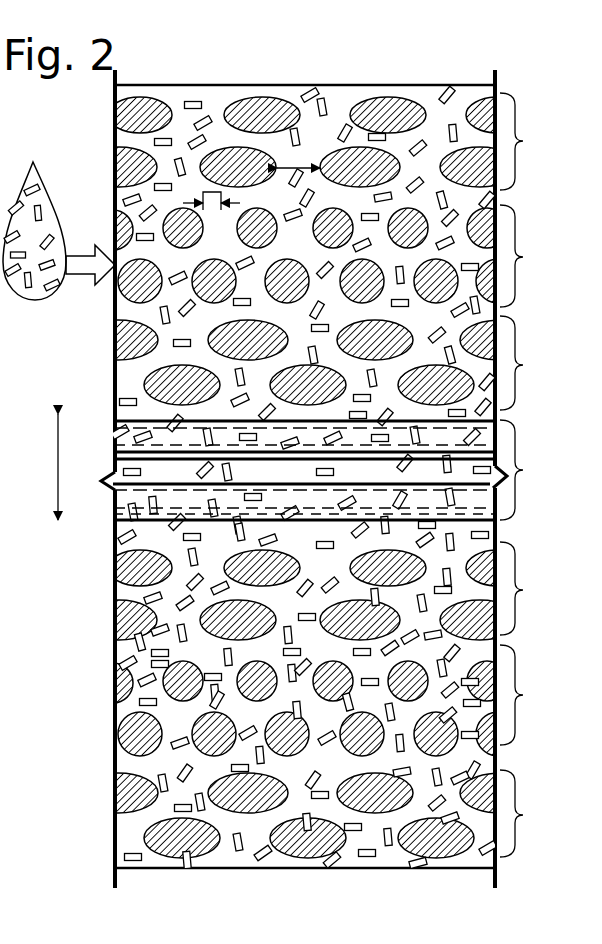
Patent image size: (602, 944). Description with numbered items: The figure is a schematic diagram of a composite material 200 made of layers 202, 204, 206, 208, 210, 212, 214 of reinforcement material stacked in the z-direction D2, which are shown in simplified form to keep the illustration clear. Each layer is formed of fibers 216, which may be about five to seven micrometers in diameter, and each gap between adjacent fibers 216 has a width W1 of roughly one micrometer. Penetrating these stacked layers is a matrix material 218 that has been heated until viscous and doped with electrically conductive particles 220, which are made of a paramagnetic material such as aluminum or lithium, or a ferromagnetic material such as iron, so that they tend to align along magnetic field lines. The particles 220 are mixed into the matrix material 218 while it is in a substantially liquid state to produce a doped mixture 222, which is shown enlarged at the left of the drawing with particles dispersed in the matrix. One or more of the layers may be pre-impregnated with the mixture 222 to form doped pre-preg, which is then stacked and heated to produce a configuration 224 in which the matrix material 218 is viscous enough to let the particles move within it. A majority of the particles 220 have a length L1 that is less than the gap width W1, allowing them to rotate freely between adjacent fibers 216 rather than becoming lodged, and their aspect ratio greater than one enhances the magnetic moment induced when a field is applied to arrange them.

The composite material 200 is at (247, 42).
The layer of reinforcement material 202 is at (540, 141).
The layer of reinforcement material 204 is at (540, 256).
The layer of reinforcement material 206 is at (540, 363).
The layer of reinforcement material 208 is at (347, 470).
The layer of reinforcement material 210 is at (540, 588).
The layer of reinforcement material 212 is at (540, 695).
The layer of reinforcement material 214 is at (540, 813).
The fibers 216 is at (388, 105).
The matrix material 218 is at (215, 97).
The electrically conductive particles 220 is at (323, 107).
The doped mixture 222 is at (72, 147).
The configuration 224 is at (190, 61).
The gap width W1 is at (303, 166).
The particle length L1 is at (225, 214).
The z-direction D2 is at (62, 477).